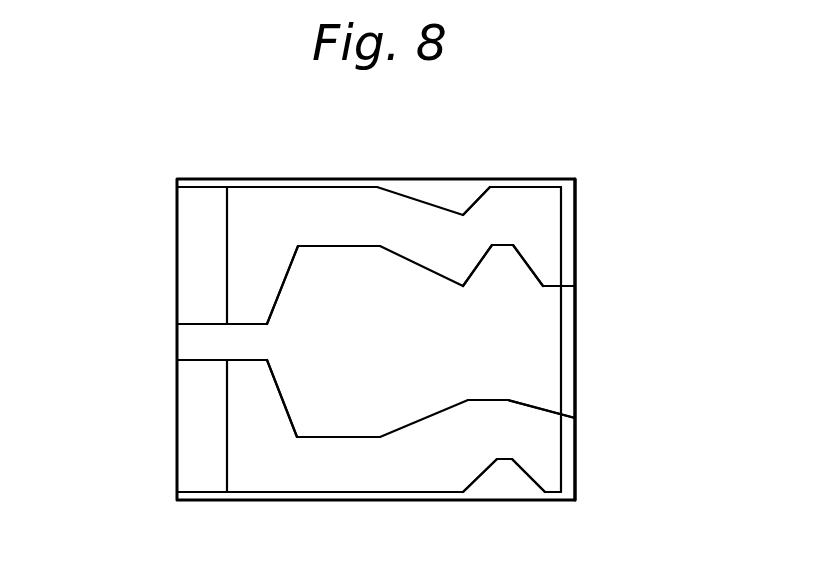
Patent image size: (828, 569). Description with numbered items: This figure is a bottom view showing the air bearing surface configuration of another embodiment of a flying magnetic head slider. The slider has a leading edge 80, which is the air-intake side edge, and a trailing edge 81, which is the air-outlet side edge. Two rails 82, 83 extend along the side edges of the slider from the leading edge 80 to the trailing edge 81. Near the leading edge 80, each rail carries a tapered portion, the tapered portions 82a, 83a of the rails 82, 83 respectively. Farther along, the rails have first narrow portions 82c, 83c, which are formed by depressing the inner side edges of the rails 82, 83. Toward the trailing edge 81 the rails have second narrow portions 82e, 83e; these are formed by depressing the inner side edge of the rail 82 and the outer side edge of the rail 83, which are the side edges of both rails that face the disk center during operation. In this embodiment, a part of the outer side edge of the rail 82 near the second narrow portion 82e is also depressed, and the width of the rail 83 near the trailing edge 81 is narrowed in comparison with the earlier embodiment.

The leading edge 80 is at (177, 383).
The trailing edge 81 is at (577, 343).
The rail 82 is at (336, 226).
The tapered portion 82a is at (183, 245).
The first narrow portion 82c is at (308, 221).
The second narrow portion 82e is at (517, 212).
The rail 83 is at (368, 456).
The tapered portion 83a is at (182, 458).
The first narrow portion 83c is at (297, 465).
The second narrow portion 83e is at (509, 425).